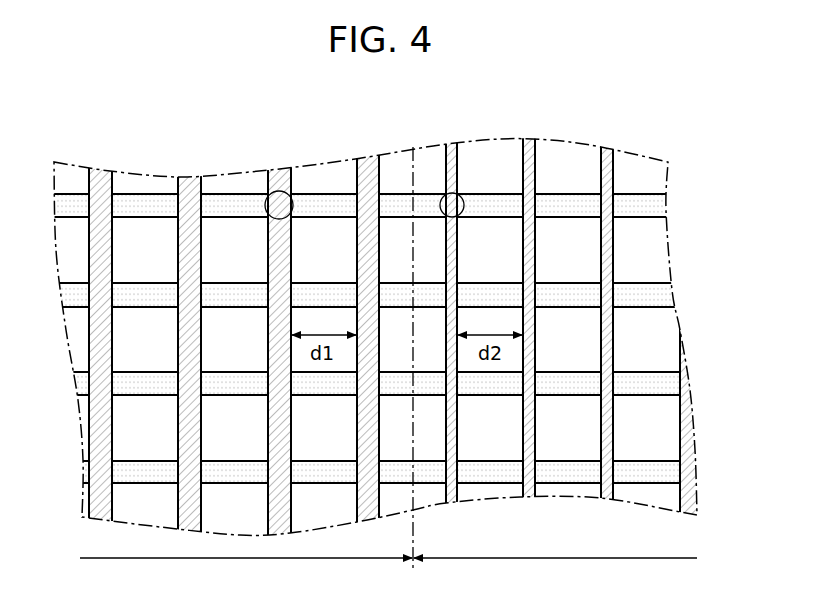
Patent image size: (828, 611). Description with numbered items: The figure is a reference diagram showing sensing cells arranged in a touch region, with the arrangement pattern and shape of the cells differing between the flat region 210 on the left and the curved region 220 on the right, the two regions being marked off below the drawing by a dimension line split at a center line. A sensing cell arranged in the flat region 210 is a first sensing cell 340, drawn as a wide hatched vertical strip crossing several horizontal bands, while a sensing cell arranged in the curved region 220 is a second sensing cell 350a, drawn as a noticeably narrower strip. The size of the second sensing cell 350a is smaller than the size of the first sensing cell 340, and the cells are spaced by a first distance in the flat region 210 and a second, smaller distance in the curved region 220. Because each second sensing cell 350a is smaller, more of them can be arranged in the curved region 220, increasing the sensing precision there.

The flat region 210 is at (246, 573).
The curved region 220 is at (555, 573).
The first sensing cell 340 is at (279, 192).
The second sensing cell 350a is at (452, 194).